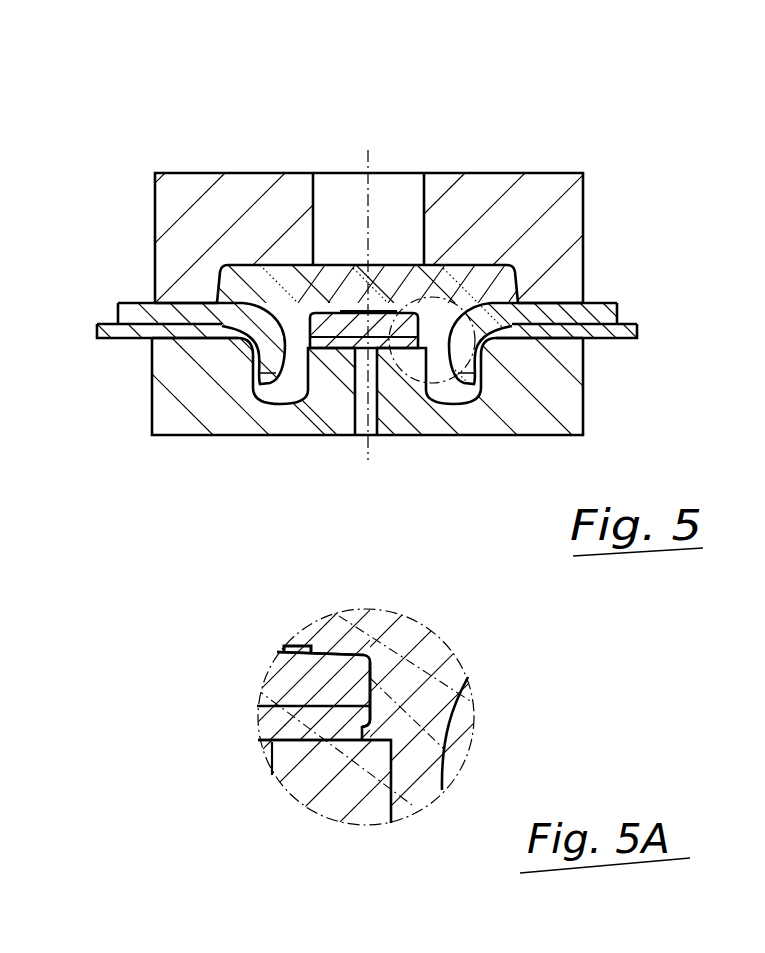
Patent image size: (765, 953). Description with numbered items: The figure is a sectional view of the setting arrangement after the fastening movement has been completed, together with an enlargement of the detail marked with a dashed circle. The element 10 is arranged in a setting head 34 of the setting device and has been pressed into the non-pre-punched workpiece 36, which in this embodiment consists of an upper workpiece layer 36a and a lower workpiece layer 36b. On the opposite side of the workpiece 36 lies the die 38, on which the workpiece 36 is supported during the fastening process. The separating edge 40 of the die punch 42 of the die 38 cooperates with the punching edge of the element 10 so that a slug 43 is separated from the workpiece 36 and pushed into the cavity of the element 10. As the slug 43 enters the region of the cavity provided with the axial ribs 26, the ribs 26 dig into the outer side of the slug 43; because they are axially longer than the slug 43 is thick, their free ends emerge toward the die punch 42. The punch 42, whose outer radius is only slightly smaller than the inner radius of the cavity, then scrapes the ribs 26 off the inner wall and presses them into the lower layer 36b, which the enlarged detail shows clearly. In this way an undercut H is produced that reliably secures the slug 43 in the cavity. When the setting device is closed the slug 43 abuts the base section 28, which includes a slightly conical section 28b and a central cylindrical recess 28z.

In FIG. 5, the element 10 is at (388, 253).
In FIG. 5, the setting head 34 is at (583, 220).
In FIG. 5, the workpiece 36 is at (640, 306).
In FIG. 5, the upper workpiece layer 36a is at (597, 305).
In FIG. 5, the lower workpiece layer 36b is at (618, 340).
In FIG. 5, the die 38 is at (152, 403).
In FIG. 5, the slug 43 is at (338, 357).
In FIG. 5A, the axial ribs 26 is at (368, 687).
In FIG. 5A, the base section 28 is at (365, 650).
In FIG. 5A, the projection top surface 28b is at (337, 650).
In FIG. 5A, the central cylindrical recess 28z is at (297, 647).
In FIG. 5A, the separating edge 40 is at (395, 737).
In FIG. 5A, the die punch 42 is at (351, 803).
In FIG. 5A, the undercut H is at (355, 719).